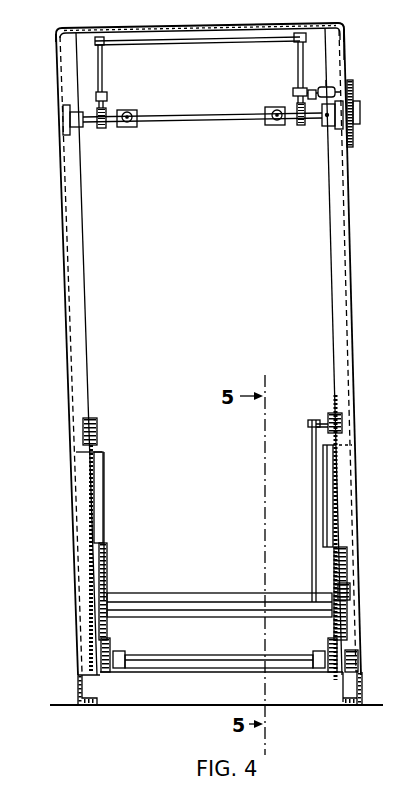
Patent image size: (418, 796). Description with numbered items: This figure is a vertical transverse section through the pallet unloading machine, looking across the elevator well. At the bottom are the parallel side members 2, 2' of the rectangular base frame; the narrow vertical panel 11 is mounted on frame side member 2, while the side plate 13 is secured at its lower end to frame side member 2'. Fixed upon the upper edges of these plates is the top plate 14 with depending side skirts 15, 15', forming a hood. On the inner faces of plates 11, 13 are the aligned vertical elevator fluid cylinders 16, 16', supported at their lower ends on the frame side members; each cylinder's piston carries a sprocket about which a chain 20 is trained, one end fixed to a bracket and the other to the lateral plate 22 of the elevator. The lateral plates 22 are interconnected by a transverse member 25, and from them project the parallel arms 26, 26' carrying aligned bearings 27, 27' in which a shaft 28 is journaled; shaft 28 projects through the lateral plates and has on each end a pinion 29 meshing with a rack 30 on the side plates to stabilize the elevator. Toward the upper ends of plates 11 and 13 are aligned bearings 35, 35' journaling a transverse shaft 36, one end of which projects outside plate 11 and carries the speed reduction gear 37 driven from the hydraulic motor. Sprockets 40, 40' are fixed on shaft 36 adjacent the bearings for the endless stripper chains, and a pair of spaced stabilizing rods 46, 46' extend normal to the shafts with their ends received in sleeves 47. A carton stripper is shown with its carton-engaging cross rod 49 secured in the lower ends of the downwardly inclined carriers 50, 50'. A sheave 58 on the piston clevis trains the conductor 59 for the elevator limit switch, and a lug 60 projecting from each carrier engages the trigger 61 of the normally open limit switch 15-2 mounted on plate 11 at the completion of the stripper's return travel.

The frame side member 2 is at (365, 687).
The frame side member 2' is at (71, 690).
The vertical panel or plate 11 is at (348, 180).
The side plate 13 is at (60, 181).
The top plate 14 is at (93, 32).
The side skirt 15 is at (364, 41).
The side skirt 15' is at (44, 354).
The limit switch LS-2 15-2 is at (330, 88).
The elevator fluid cylinder 16 is at (318, 496).
The elevator fluid cylinder 16' is at (106, 526).
The chain 20 is at (340, 494).
The lateral plate 22 is at (107, 557).
The transverse member 25 is at (190, 600).
The arm 26 is at (315, 666).
The arm 26' is at (121, 668).
The bearing 27 is at (302, 649).
The bearing 27' is at (129, 651).
The shaft 28 is at (200, 656).
The pinion 29 is at (358, 665).
The rack 30 is at (352, 590).
The bearing 35 is at (315, 133).
The bearing 35' is at (86, 136).
The shaft 36 is at (222, 123).
The speed reduction gear 37 is at (356, 93).
The sprocket 40 is at (287, 121).
The sprocket 40' is at (121, 122).
The stabilizing rod 46 is at (254, 107).
The stabilizing rod 46' is at (150, 125).
The sleeve 47 is at (132, 110).
The carton-engaging cross rod 49 is at (218, 46).
The carrier 50 is at (114, 64).
The carrier 50' is at (284, 60).
The sheave 58 is at (312, 421).
The conductor 59 is at (311, 466).
The lug 60 is at (313, 99).
The trigger 61 is at (322, 93).